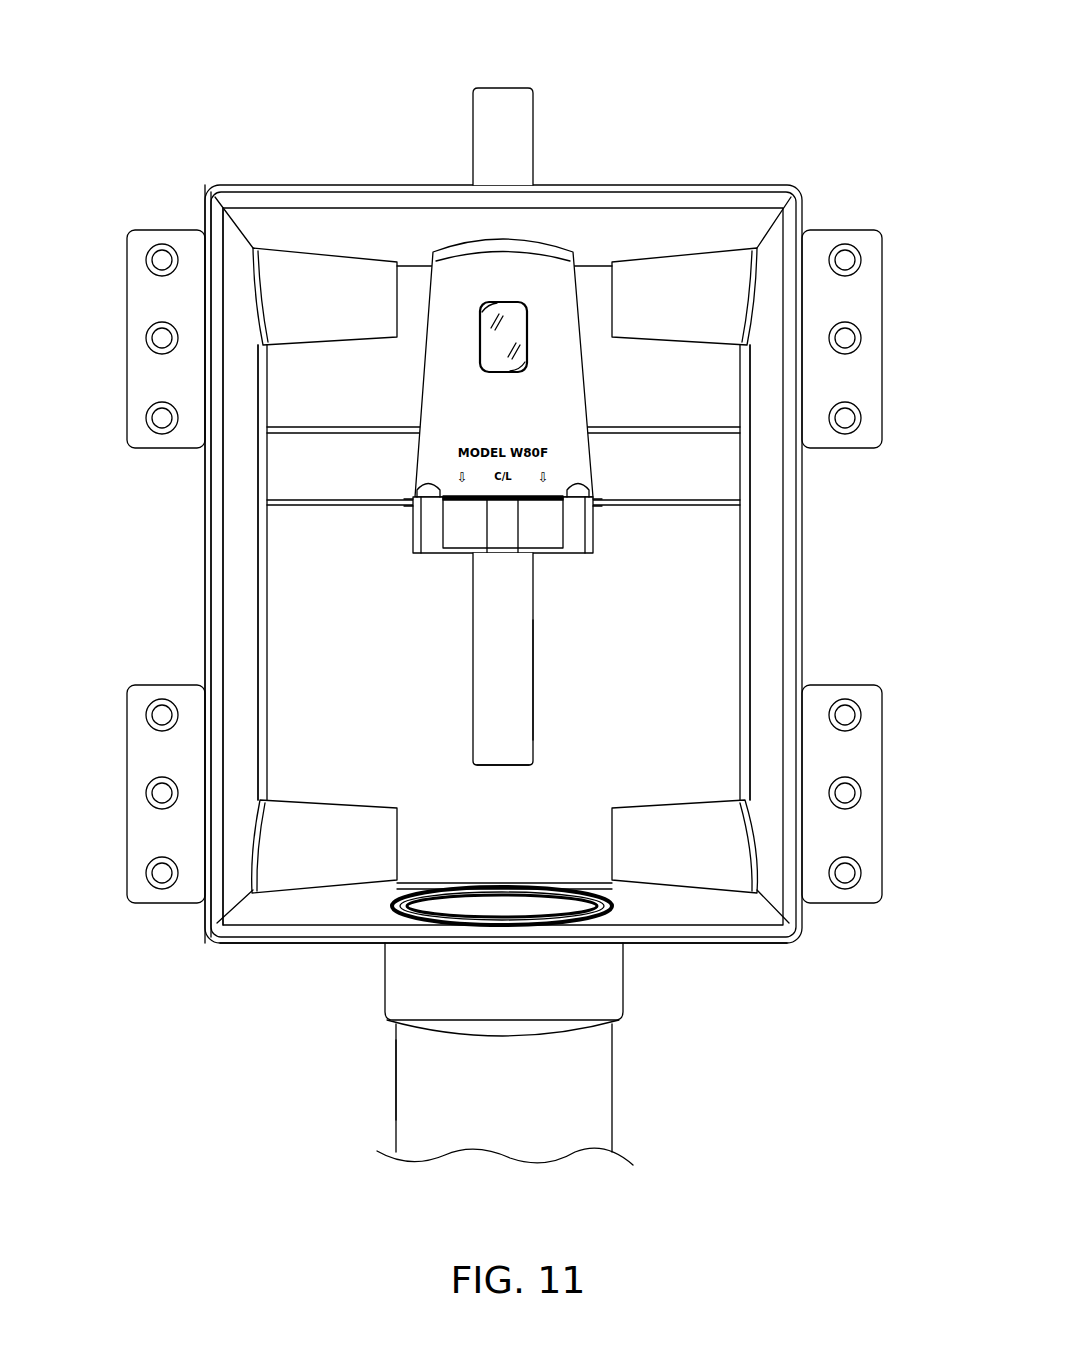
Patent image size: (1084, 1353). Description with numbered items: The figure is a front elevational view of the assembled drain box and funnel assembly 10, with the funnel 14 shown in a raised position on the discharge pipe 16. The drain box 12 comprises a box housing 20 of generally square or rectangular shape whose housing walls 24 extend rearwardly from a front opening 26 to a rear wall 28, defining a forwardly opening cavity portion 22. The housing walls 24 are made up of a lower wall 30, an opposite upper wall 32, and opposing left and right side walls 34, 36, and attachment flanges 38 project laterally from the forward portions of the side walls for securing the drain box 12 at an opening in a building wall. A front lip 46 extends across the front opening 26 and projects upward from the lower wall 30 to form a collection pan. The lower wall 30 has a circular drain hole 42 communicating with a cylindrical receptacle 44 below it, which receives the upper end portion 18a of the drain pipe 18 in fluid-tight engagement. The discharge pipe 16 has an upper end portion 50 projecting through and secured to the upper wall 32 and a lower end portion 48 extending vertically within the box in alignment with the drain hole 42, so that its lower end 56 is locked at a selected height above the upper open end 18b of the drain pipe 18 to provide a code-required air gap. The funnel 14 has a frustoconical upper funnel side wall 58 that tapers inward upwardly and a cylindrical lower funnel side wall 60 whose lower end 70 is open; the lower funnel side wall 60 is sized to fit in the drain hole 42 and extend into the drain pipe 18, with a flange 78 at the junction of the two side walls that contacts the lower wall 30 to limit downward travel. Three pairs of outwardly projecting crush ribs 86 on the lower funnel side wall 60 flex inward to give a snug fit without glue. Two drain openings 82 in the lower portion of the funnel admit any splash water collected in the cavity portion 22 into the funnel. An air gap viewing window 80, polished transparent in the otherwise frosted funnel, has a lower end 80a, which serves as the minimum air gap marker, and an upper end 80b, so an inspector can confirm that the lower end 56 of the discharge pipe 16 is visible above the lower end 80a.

The drain box and funnel assembly 10 is at (750, 52).
The drain box 12 is at (803, 556).
The funnel 14 is at (580, 292).
The discharge pipe 16 is at (533, 705).
The drain pipe 18 is at (612, 1068).
The upper end portion of the drain pipe 18a is at (442, 1048).
The upper open end of the drain pipe 18b is at (588, 950).
The box housing 20 is at (796, 612).
The cavity portion 22 is at (305, 625).
The housing walls 24 is at (212, 530).
The front opening 26 is at (247, 579).
The rear wall 28 is at (340, 746).
The lower wall 30 is at (712, 912).
The upper wall 32 is at (683, 225).
The left side wall 34 is at (240, 482).
The right side wall 36 is at (780, 481).
The attachment flanges 38 is at (148, 298).
The drain hole 42 is at (510, 895).
The receptacle 44 is at (412, 975).
The front lip 46 is at (272, 937).
The lower end portion of the discharge pipe 48 is at (520, 655).
The upper end portion of the discharge pipe 50 is at (520, 108).
The lower end of the discharge pipe 56 is at (515, 770).
The upper funnel side wall 58 is at (583, 328).
The lower funnel side wall 60 is at (600, 522).
The lower end of the lower funnel side wall 70 is at (575, 549).
The flange 78 is at (600, 492).
The air gap viewing window 80 is at (510, 348).
The lower end of the air gap viewing window 80a is at (505, 368).
The upper end of the air gap viewing window 80b is at (490, 316).
The drain openings 82 is at (430, 530).
The crush ribs 86 is at (487, 532).